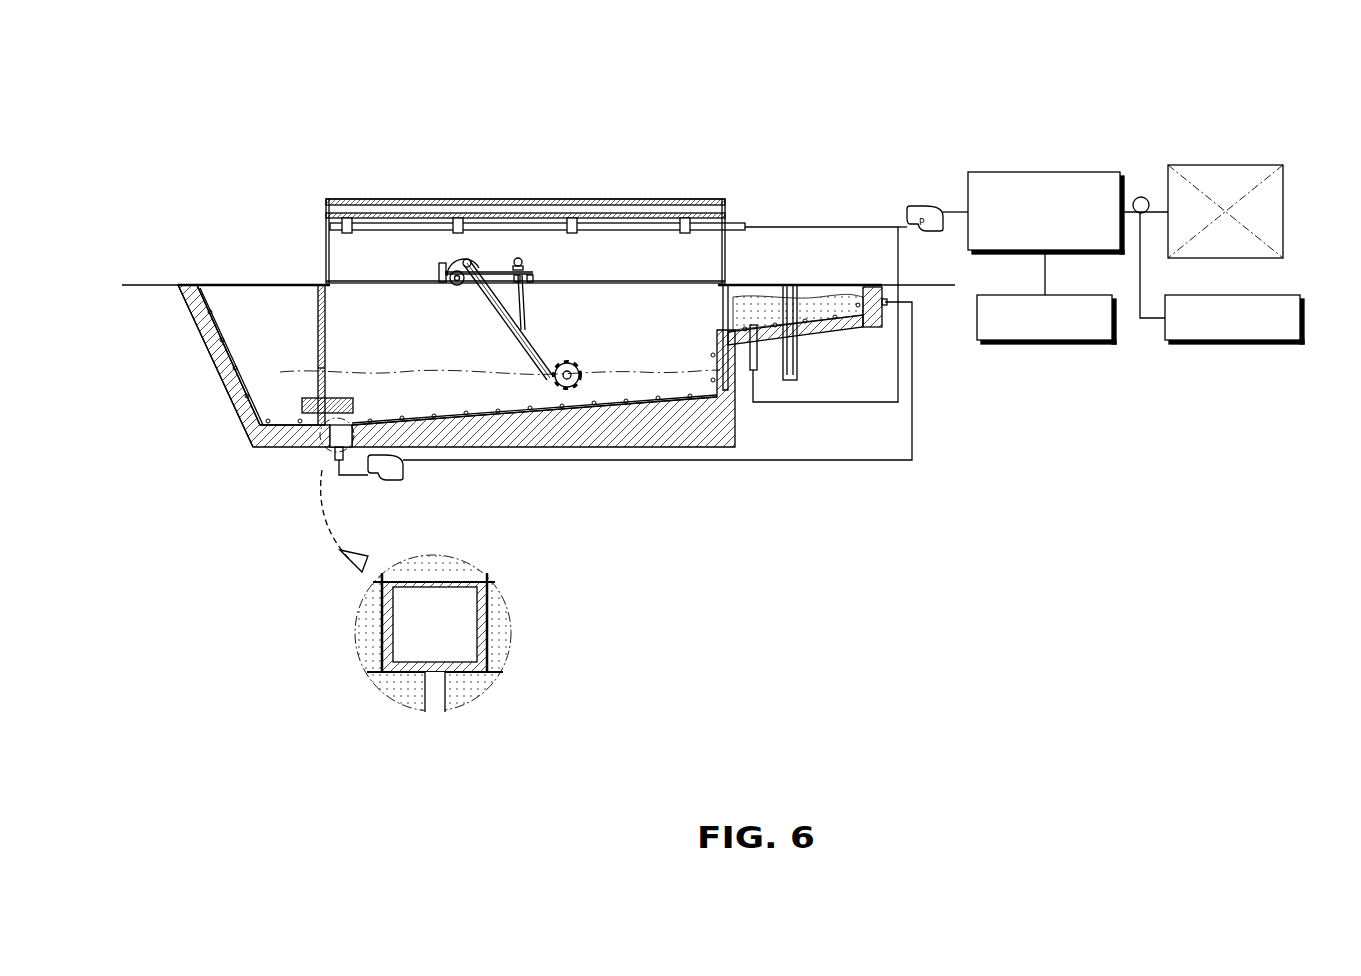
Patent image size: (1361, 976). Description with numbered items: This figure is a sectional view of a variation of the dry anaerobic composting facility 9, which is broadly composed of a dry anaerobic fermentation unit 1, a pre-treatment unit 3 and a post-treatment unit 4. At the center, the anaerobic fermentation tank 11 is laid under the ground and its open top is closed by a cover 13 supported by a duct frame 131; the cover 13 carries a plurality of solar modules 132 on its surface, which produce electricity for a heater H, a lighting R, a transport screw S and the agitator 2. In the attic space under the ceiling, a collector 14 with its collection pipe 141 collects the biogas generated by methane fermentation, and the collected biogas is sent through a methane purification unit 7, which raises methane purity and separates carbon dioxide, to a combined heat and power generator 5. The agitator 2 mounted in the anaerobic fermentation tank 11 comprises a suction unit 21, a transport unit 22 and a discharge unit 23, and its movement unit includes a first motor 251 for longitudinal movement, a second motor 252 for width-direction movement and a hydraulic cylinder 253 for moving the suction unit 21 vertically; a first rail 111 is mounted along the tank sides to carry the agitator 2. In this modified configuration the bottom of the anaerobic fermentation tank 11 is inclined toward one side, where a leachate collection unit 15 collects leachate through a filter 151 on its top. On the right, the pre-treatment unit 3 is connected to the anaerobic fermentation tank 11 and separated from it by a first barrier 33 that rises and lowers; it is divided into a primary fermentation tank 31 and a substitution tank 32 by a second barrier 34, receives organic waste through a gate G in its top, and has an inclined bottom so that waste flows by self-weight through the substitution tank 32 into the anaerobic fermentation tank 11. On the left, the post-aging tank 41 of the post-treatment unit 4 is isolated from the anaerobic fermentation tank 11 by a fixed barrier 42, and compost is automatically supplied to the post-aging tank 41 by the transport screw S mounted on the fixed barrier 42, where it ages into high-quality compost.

The dry anaerobic composting facility 9 is at (375, 68).
The dry anaerobic fermentation unit 1 is at (522, 349).
The collector 14 is at (535, 214).
The solar modules 132 is at (483, 200).
The collection pipe 141 is at (550, 213).
The duct frame 131 is at (627, 207).
The cover 13 is at (728, 243).
The pre-treatment unit 3 is at (795, 360).
The primary fermentation tank 31 is at (828, 297).
The first barrier 33 is at (722, 320).
The second barrier 34 is at (807, 317).
The substitution tank 32 is at (745, 350).
The agitator 2 is at (516, 310).
The first motor 251 is at (440, 265).
The second motor 252 is at (523, 260).
The hydraulic cylinder 253 is at (520, 308).
The discharge unit 23 is at (443, 299).
The transport unit 22 is at (500, 322).
The suction unit 21 is at (591, 357).
The first rail 111 is at (340, 277).
The post-treatment unit 4 is at (207, 240).
The post-aging tank 41 is at (253, 355).
The fixed barrier 42 is at (322, 368).
The filter 151 is at (437, 582).
The leachate collection unit 15 is at (487, 625).
The anaerobic fermentation tank 11 is at (606, 400).
The methane purification unit 7 is at (1043, 172).
The combined heat and power generator 5 is at (1227, 165).
The gate G is at (240, 283).
The lighting R is at (218, 297).
The heater H is at (247, 410).
The transport screw S is at (330, 435).